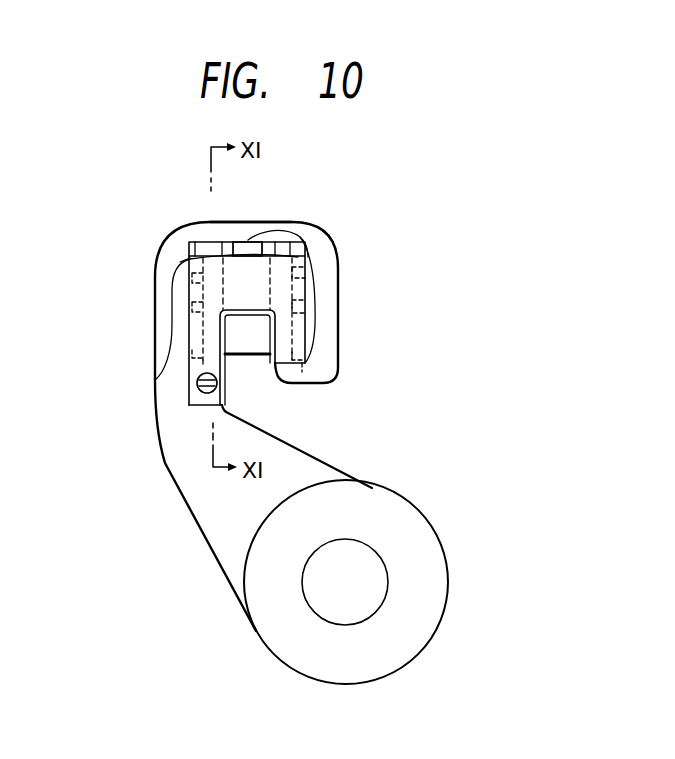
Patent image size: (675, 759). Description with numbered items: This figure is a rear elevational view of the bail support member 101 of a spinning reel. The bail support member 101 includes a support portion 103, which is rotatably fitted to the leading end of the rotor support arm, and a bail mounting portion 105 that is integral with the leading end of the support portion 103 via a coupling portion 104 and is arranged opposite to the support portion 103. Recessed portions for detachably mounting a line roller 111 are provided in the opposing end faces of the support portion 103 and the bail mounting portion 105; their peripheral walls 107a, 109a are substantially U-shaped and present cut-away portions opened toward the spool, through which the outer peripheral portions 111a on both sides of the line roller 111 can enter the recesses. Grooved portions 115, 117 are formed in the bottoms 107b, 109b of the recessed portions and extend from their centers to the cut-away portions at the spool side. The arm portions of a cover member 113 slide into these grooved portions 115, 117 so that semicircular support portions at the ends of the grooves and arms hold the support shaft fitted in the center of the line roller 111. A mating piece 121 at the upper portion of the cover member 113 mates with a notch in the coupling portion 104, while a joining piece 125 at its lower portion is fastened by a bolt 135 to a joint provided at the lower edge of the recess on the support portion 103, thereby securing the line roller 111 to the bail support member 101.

The bail support member 101 is at (174, 489).
The support portion 103 is at (162, 389).
The coupling portion 104 is at (248, 223).
The bail mounting portion 105 is at (323, 322).
The peripheral wall 107a is at (188, 358).
The bottom 107b is at (188, 277).
The peripheral wall 109a is at (302, 367).
The bottom 109b is at (305, 262).
The line roller 111 is at (250, 348).
The outer peripheral portions 111a is at (188, 258).
The cover member 113 is at (288, 343).
The grooved portion 115 is at (188, 318).
The grooved portion 117 is at (305, 308).
The mating piece 121 is at (250, 243).
The joining piece 125 is at (201, 408).
The bolt 135 is at (199, 389).